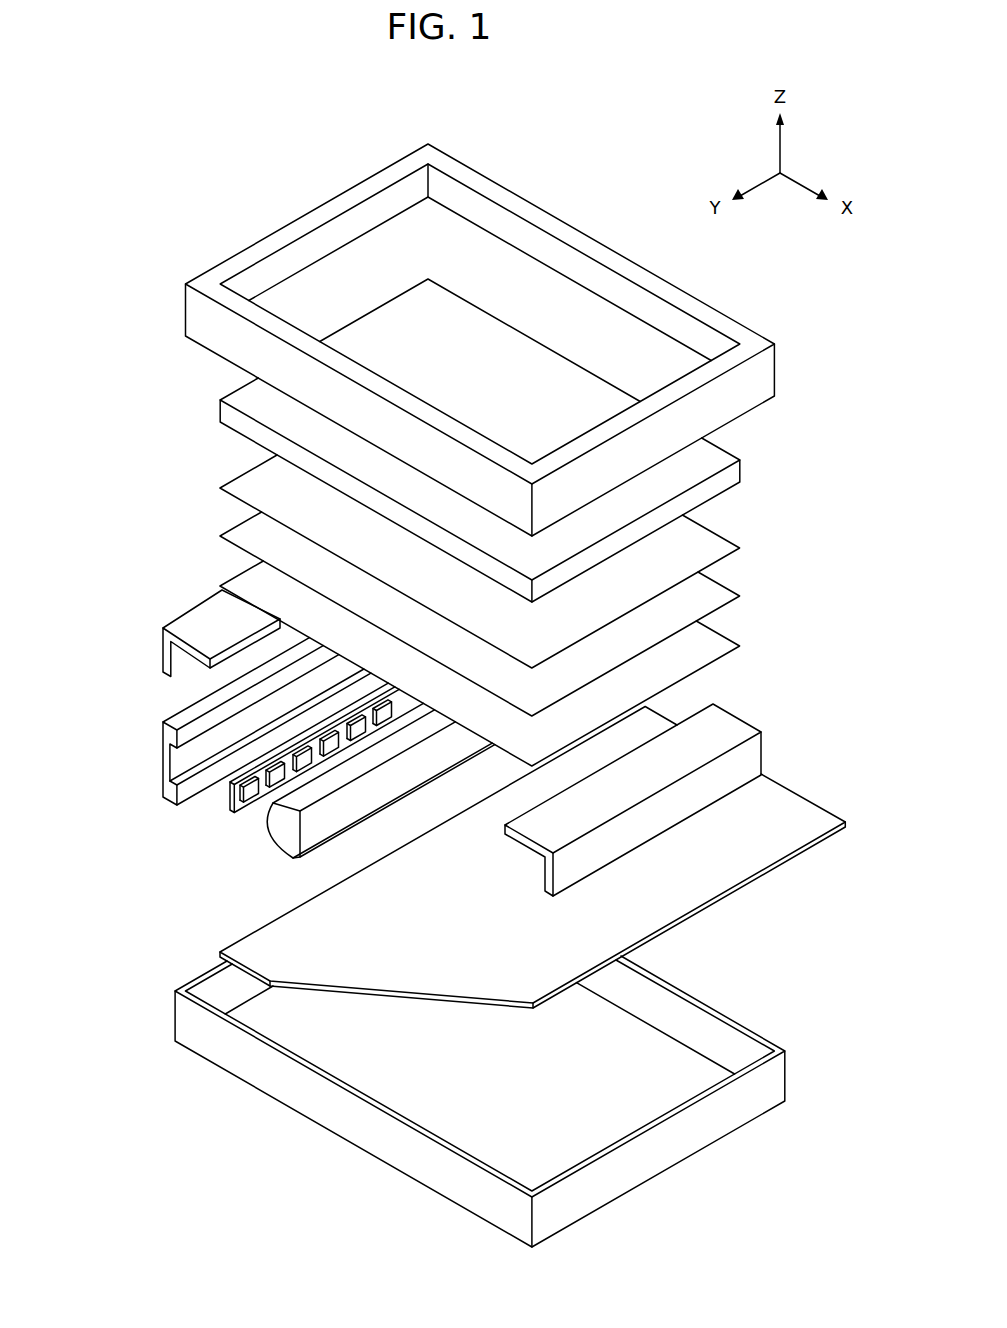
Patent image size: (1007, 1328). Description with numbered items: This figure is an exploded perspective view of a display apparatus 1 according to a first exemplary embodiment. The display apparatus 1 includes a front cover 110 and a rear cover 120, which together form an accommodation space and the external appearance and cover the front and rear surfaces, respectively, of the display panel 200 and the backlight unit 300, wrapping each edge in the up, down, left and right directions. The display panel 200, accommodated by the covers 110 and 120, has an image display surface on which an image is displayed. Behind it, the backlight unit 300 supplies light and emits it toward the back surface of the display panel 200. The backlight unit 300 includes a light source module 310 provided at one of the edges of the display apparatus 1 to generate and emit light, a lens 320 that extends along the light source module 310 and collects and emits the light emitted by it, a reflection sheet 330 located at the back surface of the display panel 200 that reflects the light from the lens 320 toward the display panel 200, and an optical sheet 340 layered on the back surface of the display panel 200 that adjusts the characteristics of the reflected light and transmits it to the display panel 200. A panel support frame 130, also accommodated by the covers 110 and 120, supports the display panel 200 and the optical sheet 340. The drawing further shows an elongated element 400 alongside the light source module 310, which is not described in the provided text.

The display apparatus 1 is at (230, 161).
The front cover 110 is at (192, 316).
The rear cover 120 is at (190, 1022).
The panel support frame 130 is at (163, 651).
The display panel 200 is at (220, 412).
The backlight unit 300 is at (77, 543).
The light source module 310 is at (231, 796).
The lens 320 is at (276, 840).
The reflection sheet 330 is at (222, 951).
The optical sheet 340 is at (234, 495).
The heat sink bar 400 is at (163, 735).